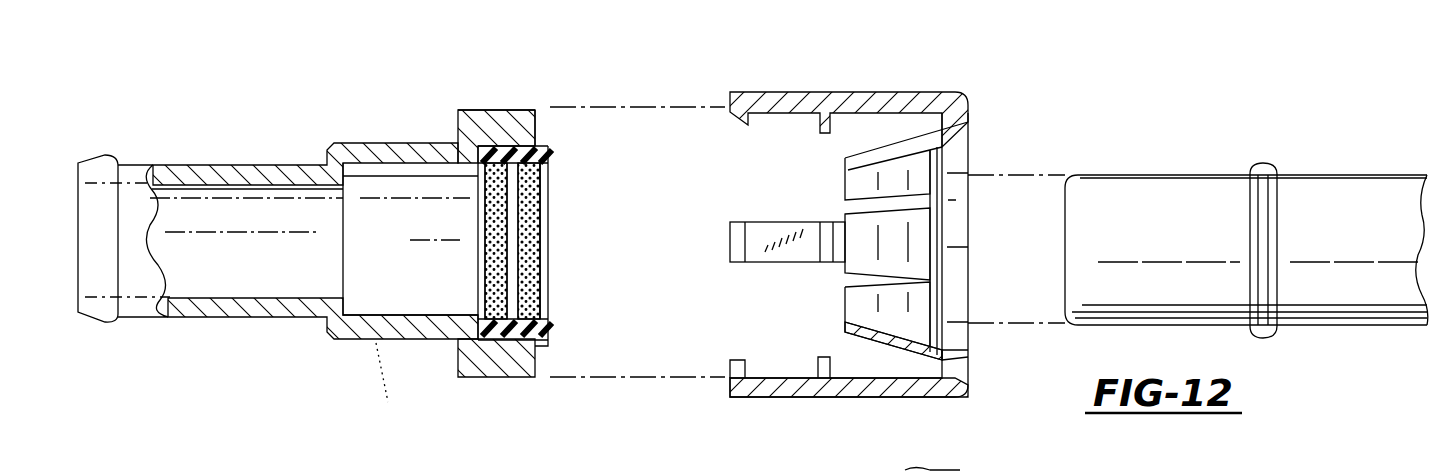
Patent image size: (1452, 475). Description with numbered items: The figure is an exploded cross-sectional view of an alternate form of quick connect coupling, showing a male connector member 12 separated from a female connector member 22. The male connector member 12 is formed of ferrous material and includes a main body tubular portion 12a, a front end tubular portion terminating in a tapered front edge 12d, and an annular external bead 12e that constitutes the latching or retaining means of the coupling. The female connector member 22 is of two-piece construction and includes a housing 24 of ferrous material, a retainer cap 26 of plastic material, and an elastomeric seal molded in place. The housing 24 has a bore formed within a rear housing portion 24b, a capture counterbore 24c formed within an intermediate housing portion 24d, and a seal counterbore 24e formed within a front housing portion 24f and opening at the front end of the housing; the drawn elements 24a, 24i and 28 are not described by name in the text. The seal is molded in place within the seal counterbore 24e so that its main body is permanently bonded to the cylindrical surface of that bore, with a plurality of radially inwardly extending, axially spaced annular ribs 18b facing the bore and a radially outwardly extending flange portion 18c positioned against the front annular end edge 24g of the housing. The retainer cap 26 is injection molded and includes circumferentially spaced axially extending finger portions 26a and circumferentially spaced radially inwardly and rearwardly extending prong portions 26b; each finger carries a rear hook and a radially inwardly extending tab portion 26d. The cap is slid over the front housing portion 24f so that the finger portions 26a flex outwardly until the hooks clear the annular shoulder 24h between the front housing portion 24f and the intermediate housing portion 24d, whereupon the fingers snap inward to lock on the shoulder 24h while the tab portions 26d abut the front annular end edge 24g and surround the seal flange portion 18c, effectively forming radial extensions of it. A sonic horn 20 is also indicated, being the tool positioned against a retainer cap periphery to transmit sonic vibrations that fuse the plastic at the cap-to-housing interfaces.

The male connector member 12 is at (1246, 189).
The main body tubular portion 12a is at (1194, 192).
The tapered front edge 12d is at (1072, 172).
The annular external bead 12e is at (1268, 137).
The annular ribs or ridges 18b is at (496, 240).
The flange portion 18c is at (550, 343).
The sonic horn 20 is at (903, 472).
The female connector member 22 is at (296, 140).
The housing 24 is at (357, 253).
The housing lower wall 24a is at (228, 285).
The rear housing portion 24b is at (218, 165).
The capture counterbore 24c is at (397, 315).
The intermediate housing portion 24d is at (408, 143).
The seal counterbore 24e is at (495, 340).
The front housing portion 24f is at (528, 110).
The front annular end edge 24g is at (548, 118).
The annular shoulder 24h is at (457, 362).
The housing internal step 24i is at (348, 170).
The retainer cap 26 is at (890, 220).
The finger portions 26a is at (808, 92).
The prong portions 26b is at (846, 176).
The tab portion 26d is at (812, 128).
The seal assembly 28 is at (546, 288).